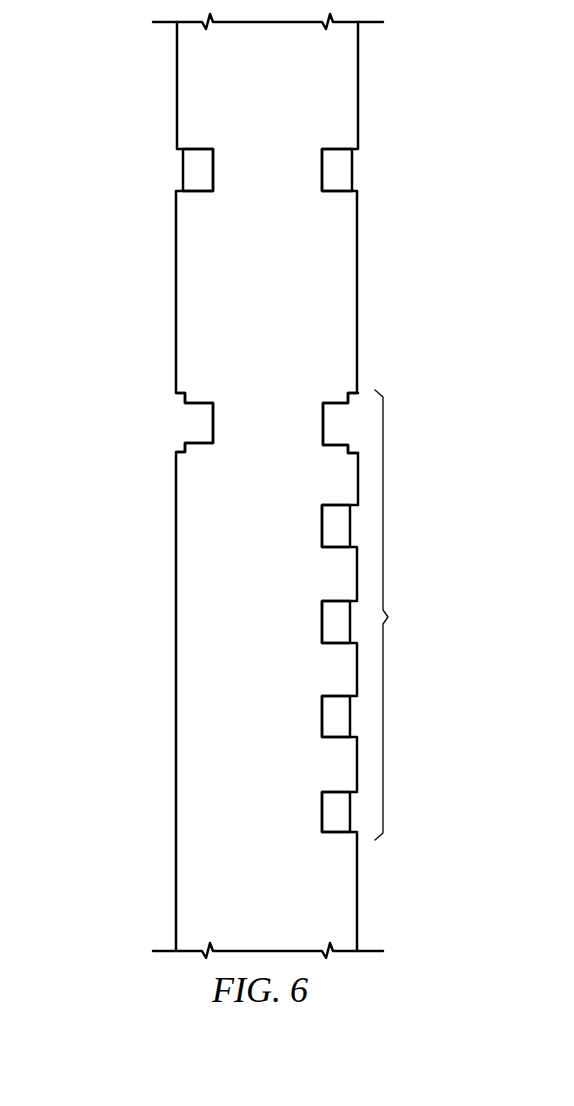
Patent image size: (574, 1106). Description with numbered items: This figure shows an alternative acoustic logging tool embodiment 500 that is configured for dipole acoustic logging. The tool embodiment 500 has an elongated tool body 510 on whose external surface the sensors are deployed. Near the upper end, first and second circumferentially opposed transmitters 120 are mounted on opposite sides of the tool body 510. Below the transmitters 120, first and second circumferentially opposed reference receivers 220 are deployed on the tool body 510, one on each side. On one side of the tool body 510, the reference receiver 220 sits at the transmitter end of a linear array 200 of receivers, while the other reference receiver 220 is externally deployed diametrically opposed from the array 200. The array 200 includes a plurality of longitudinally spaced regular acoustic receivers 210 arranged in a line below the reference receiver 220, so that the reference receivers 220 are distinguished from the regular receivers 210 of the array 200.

The tool embodiment 500 is at (118, 291).
The tool body 510 is at (176, 571).
The transmitter 120 is at (213, 167).
The reference receiver 220 is at (200, 403).
The acoustic receiver 210 is at (322, 525).
The linear array 200 is at (407, 615).